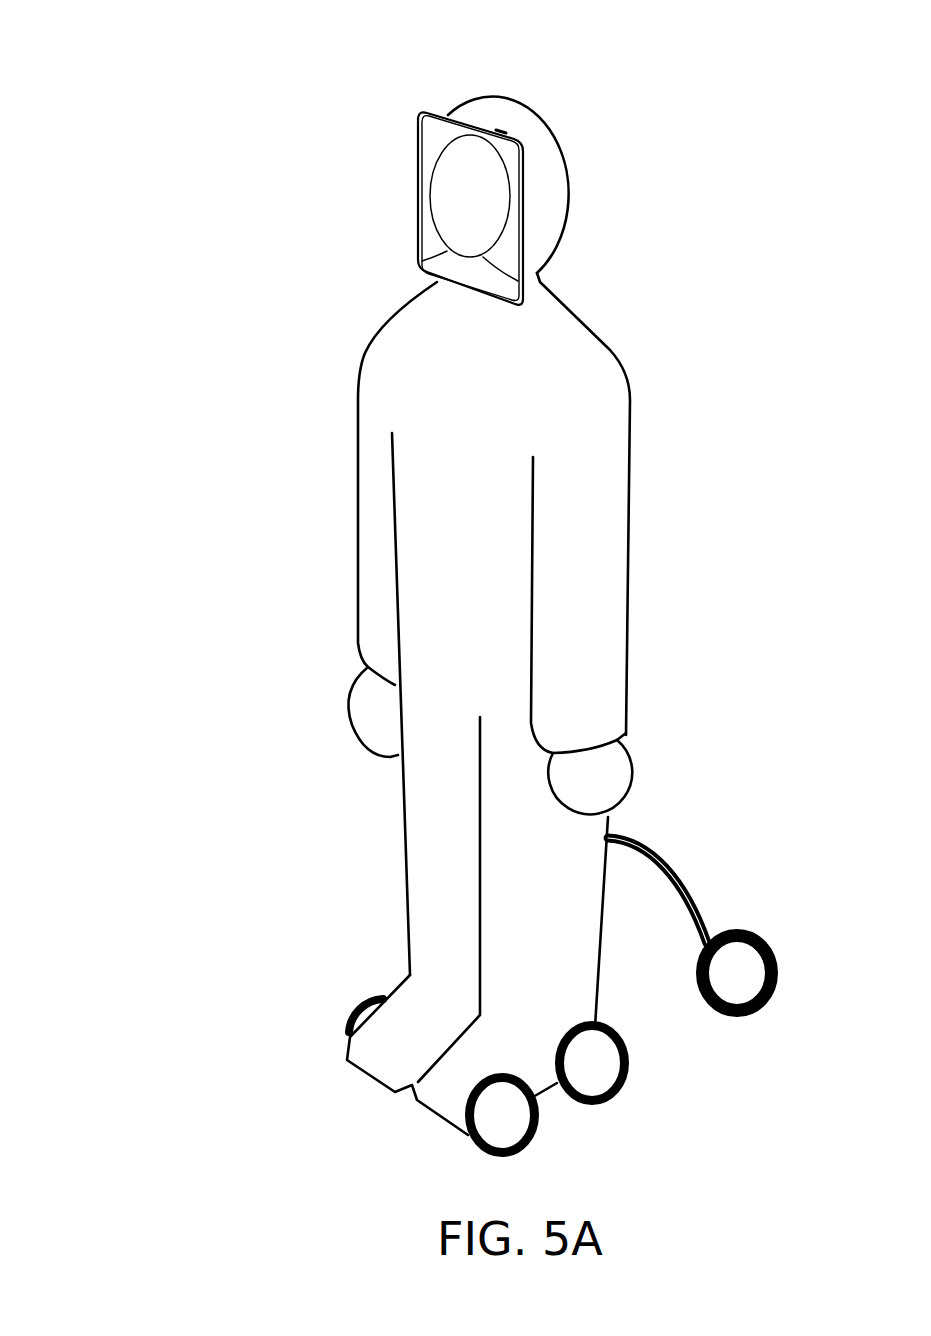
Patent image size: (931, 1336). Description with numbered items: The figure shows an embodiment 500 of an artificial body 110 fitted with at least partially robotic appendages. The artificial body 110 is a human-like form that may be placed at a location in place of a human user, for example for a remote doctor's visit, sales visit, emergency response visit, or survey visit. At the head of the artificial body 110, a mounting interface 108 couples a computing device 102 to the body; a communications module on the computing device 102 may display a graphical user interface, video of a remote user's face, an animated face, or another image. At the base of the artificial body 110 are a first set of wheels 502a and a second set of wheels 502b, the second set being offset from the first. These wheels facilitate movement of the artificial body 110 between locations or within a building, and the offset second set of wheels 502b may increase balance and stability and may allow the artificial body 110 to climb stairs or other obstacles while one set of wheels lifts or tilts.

The telepresence robot 500 is at (100, 60).
The computing device 102 is at (422, 112).
The mounting interface 108 is at (418, 202).
The artificial body 110 is at (605, 360).
The first set of wheels 502a is at (623, 1040).
The second set of wheels 502b is at (770, 947).